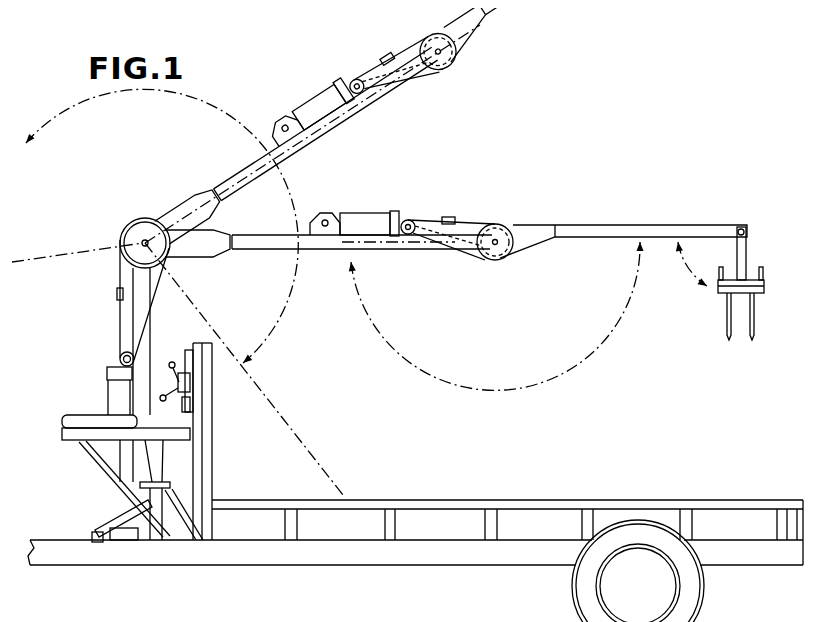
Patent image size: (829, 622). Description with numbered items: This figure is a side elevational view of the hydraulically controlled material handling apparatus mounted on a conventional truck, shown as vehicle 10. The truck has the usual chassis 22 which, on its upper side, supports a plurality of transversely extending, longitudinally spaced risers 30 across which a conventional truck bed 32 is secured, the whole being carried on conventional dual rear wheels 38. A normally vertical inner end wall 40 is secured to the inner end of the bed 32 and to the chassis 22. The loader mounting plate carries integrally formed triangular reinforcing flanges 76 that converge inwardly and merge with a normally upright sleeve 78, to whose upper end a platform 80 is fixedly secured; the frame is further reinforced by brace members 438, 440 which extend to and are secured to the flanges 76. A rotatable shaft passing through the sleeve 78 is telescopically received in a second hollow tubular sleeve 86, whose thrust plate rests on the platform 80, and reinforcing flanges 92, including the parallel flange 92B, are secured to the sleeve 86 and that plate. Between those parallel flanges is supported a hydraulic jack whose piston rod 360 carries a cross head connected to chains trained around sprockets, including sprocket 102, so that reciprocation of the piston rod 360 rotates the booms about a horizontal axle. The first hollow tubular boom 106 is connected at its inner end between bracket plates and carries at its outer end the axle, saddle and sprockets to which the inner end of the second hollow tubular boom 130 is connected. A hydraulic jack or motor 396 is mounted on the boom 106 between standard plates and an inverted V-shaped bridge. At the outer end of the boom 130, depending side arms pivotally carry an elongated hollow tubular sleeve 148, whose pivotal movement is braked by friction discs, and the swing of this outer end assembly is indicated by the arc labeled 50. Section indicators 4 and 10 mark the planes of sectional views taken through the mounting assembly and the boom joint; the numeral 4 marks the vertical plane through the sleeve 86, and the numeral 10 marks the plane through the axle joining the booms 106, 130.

The section line 4- 4 is at (52, 232).
The vehicle 10 is at (497, 197).
The chassis 22 is at (320, 568).
The risers 30 is at (483, 518).
The truck bed 32 is at (545, 503).
The dual rear wheels 38 is at (695, 592).
The inner end wall 40 is at (212, 486).
The fork head assembly 50 is at (640, 220).
The triangular reinforcing flanges 76 is at (110, 516).
The upright sleeve 78 is at (145, 530).
The platform 80 is at (120, 488).
The second hollow tubular sleeve 86 is at (140, 352).
The reinforcing flanges 92 is at (165, 464).
The flange 92B is at (122, 462).
The sprocket 102 is at (133, 251).
The first hollow tubular boom 106 is at (326, 250).
The second hollow tubular boom 130 is at (700, 227).
The elongated hollow tubular sleeve 148 is at (746, 258).
The piston rod 360 is at (118, 305).
The hydraulic jack or motor 396 is at (345, 214).
The brace member 438 is at (83, 445).
The brace member 440 is at (122, 533).